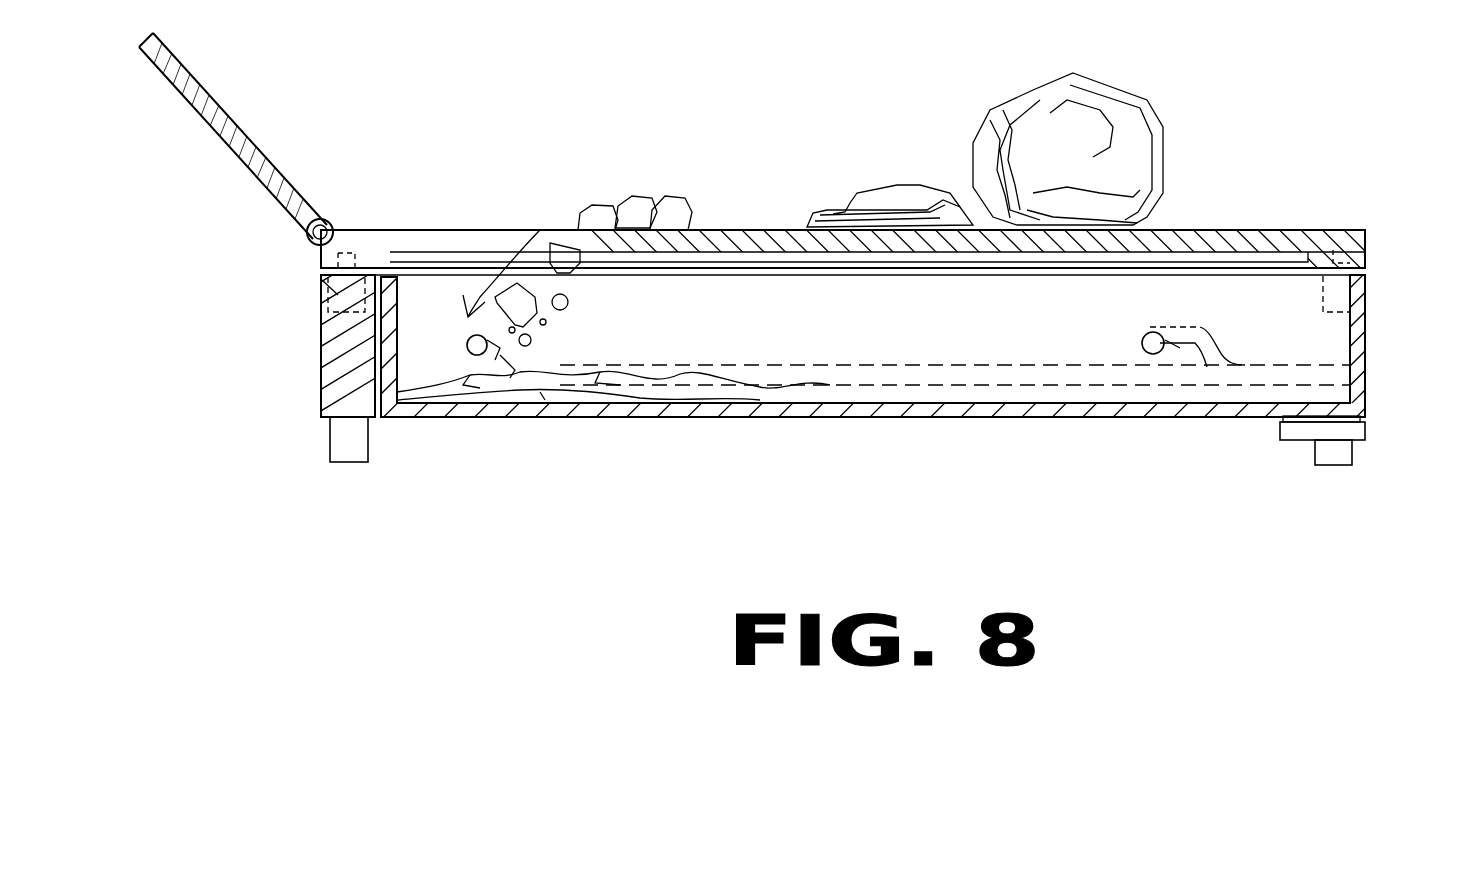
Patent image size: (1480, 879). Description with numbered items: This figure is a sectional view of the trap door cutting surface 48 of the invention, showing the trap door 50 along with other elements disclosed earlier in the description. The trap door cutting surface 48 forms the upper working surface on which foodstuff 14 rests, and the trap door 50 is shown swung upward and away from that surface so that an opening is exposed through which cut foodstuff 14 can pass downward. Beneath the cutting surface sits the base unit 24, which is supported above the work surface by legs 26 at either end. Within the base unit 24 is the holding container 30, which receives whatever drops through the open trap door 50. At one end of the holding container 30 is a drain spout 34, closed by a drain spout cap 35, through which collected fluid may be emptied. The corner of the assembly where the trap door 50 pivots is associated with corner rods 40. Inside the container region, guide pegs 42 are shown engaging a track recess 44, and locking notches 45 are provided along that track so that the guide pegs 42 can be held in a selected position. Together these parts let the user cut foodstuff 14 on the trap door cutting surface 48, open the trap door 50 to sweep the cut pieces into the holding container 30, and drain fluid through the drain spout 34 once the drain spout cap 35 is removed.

The foodstuff 14 is at (690, 205).
The base unit 24 is at (323, 383).
The legs 26 is at (363, 462).
The holding container 30 is at (1040, 417).
The drain spout 34 is at (1362, 418).
The drain spout cap 35 is at (1280, 427).
The corner rods 40 is at (321, 273).
The guide pegs 42 is at (500, 357).
The track recess 44 is at (900, 387).
The locking notches 45 is at (547, 347).
The trap door cutting surface 48 is at (1220, 230).
The trap door 50 is at (213, 97).